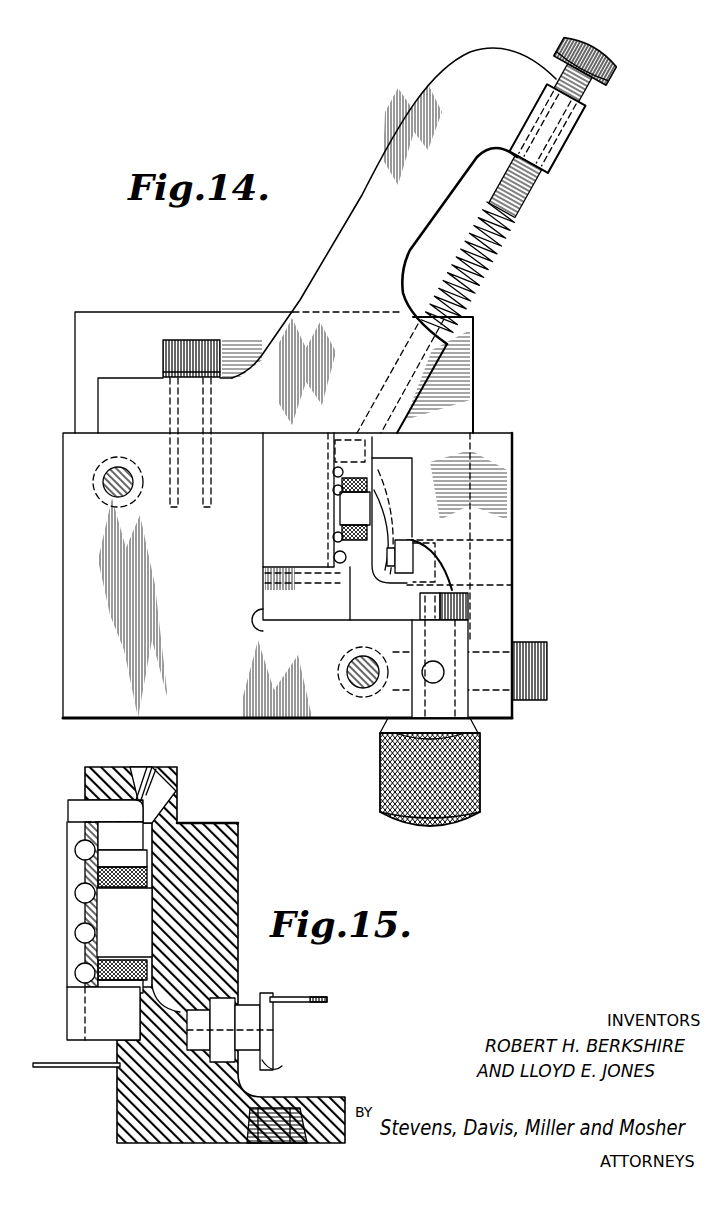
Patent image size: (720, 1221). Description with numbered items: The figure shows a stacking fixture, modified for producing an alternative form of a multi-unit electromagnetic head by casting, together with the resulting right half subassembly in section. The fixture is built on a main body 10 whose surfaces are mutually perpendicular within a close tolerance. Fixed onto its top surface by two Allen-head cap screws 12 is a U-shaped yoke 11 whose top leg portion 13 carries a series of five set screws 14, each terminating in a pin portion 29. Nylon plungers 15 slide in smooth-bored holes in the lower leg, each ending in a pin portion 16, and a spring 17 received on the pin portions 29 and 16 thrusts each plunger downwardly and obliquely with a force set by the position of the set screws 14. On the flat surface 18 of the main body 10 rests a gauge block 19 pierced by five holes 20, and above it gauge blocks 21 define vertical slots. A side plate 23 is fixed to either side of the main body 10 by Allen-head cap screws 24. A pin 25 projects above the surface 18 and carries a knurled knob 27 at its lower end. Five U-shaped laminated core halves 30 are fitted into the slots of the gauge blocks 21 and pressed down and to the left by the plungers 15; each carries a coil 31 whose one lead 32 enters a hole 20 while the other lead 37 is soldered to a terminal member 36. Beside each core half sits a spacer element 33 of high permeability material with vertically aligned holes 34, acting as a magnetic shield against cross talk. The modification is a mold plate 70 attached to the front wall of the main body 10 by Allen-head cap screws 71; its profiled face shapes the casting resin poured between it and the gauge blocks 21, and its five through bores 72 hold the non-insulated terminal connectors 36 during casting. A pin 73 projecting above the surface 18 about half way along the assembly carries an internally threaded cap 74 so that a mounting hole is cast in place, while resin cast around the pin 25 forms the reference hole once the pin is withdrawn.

In FIG. 14, the main body 10 is at (255, 708).
In FIG. 14, the yoke 11 is at (412, 128).
In FIG. 14, the Allen-head cap screws 12 is at (190, 339).
In FIG. 14, the top leg portion 13 is at (568, 146).
In FIG. 14, the set screws 14 is at (597, 88).
In FIG. 14, the nylon plungers 15 is at (470, 338).
In FIG. 14, the pin portion 16 is at (470, 319).
In FIG. 14, the spring 17 is at (479, 268).
In FIG. 14, the flat surface 18 is at (372, 621).
In FIG. 14, the gauge block 19 is at (299, 608).
In FIG. 14, the holes 20 is at (262, 585).
In FIG. 14, the gauge blocks 21 is at (275, 494).
In FIG. 14, the side plate 23 is at (110, 323).
In FIG. 14, the Allen-head cap screws 24 is at (118, 497).
In FIG. 14, the pin 25 is at (468, 605).
In FIG. 14, the knurled knob 27 is at (480, 786).
In FIG. 14, the pin portion 29 is at (506, 220).
In FIG. 14, the laminated core halves 30 is at (334, 452).
In FIG. 15, the laminated core halves 30 is at (68, 812).
In FIG. 14, the coil 31 is at (341, 487).
In FIG. 15, the coil 31 is at (97, 877).
In FIG. 14, the lead 32 is at (374, 580).
In FIG. 15, the lead 32 is at (75, 1069).
In FIG. 15, the spacer element 33 is at (67, 830).
In FIG. 15, the holes 34 is at (75, 973).
In FIG. 14, the terminal members 36 is at (408, 536).
In FIG. 15, the terminal members 36 is at (288, 1000).
In FIG. 14, the lead 37 is at (378, 552).
In FIG. 15, the lead 37 is at (275, 1024).
In FIG. 14, the mold plate 70 is at (513, 500).
In FIG. 14, the Allen-head cap screws 71 is at (547, 648).
In FIG. 14, the through bores 72 is at (498, 542).
In FIG. 14, the pin 73 is at (470, 720).
In FIG. 14, the internally threaded cap 74 is at (419, 615).
In FIG. 15, the internally threaded cap 74 is at (250, 1143).